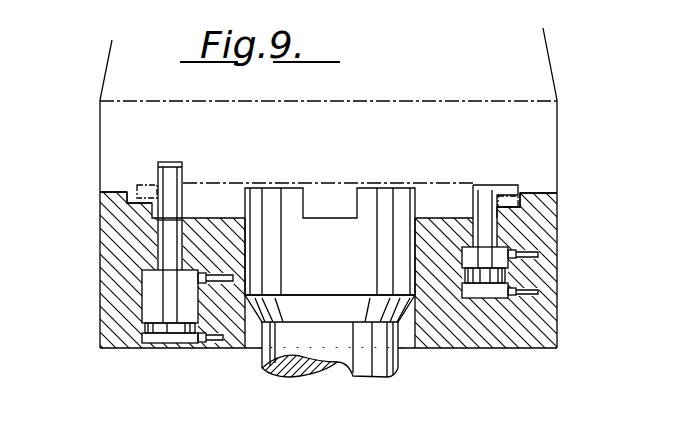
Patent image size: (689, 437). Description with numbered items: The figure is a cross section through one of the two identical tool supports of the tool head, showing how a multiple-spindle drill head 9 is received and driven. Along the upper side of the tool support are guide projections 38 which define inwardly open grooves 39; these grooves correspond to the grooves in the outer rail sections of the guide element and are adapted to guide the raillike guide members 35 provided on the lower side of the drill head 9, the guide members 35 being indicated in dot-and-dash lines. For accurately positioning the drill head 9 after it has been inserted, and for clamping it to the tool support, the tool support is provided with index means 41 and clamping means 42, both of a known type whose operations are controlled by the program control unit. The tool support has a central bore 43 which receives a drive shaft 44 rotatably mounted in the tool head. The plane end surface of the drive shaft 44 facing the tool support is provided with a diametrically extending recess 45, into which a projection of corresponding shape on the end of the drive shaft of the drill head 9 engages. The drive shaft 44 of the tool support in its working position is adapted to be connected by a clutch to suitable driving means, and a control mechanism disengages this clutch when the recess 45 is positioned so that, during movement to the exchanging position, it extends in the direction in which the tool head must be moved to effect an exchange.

The drill head 9 is at (557, 128).
The guide members 35 is at (504, 196).
The guide projections 38 is at (557, 197).
The grooves 39 is at (523, 198).
The index means 41 is at (156, 253).
The clamping means 42 is at (505, 238).
The central bore 43 is at (406, 350).
The drive shaft 44 is at (340, 352).
The recess 45 is at (304, 207).